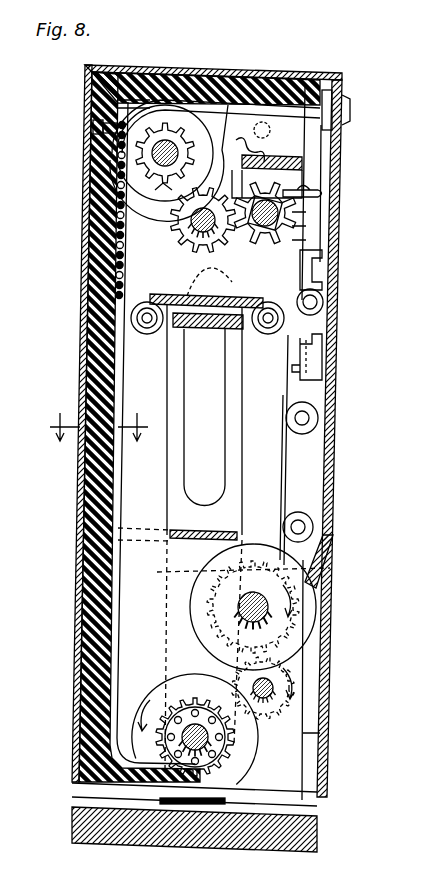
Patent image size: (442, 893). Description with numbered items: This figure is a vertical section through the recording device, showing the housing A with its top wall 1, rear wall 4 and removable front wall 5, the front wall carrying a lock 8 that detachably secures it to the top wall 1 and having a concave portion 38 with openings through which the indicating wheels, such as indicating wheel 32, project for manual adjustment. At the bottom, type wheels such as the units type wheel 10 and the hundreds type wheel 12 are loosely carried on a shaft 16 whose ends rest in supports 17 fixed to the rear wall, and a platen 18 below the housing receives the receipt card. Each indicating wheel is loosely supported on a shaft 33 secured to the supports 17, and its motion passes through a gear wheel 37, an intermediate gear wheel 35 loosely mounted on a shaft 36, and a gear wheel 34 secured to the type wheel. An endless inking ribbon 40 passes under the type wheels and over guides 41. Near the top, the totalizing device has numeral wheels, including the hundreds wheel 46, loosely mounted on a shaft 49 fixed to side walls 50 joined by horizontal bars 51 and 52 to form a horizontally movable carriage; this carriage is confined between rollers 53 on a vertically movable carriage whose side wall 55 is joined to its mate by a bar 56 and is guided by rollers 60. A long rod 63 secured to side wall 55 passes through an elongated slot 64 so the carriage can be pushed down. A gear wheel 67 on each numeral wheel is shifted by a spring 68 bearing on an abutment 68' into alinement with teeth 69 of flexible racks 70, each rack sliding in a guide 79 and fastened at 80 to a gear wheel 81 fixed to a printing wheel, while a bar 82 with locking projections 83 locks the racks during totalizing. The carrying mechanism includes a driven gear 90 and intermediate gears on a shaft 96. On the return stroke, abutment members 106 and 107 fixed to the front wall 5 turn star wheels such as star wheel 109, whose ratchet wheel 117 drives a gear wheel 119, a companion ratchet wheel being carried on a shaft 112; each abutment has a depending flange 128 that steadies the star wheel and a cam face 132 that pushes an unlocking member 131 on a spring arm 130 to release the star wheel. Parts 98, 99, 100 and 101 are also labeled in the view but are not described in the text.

The top wall 1 is at (263, 68).
The rear wall 4 is at (73, 518).
The removable front wall 5 is at (334, 478).
The lock 8 is at (352, 125).
The type wheel 10 is at (84, 245).
The type wheel 12 is at (237, 790).
The shaft 16 is at (188, 718).
The supports 17 is at (290, 790).
The platen 18 is at (318, 834).
The indicating wheel 32 is at (318, 607).
The shaft 33 is at (238, 609).
The gear wheel 34 is at (232, 742).
The intermediate gear wheel 35 is at (296, 690).
The shaft 36 is at (255, 681).
The gear wheel 37 is at (322, 560).
The concave portion 38 is at (327, 648).
The endless ribbon 40 is at (228, 531).
The guides 41 is at (207, 541).
The numeral wheel 46 is at (213, 108).
The shaft 49 is at (165, 140).
The side walls 50 is at (298, 231).
The horizontal bar 51 is at (306, 162).
The horizontal bar 52 is at (260, 304).
The rollers 53 is at (148, 336).
The side wall 55 is at (290, 445).
The bar 56 is at (204, 331).
The guide rollers 60 is at (324, 306).
The long rod 63 is at (200, 295).
The elongated slot 64 is at (186, 436).
The gear wheel 67 is at (163, 186).
The spring 68 is at (364, 150).
The abutment 68' is at (369, 205).
The teeth 69 is at (125, 264).
The flexible rack 70 is at (112, 652).
The guide 79 is at (247, 72).
The fastening point 80 is at (182, 737).
The gear wheel 81 is at (152, 718).
The bar 82 is at (92, 138).
The locking projections 83 is at (88, 130).
The driven gear 90 is at (192, 243).
The shaft 96 is at (209, 283).
The ring 98 is at (182, 110).
The ring 99 is at (205, 110).
The guide 100 is at (150, 90).
The spring 101 is at (256, 146).
The abutment member 106 is at (323, 346).
The abutment member 107 is at (323, 272).
The star wheel 109 is at (324, 262).
The shaft 112 is at (338, 220).
The ratchet wheel 117 is at (241, 252).
The gear wheel 119 is at (333, 197).
The depending flange 128 is at (300, 257).
The spring arm 130 is at (271, 131).
The unlocking member 131 is at (322, 188).
The cam face 132 is at (330, 292).
The housing A is at (188, 100).